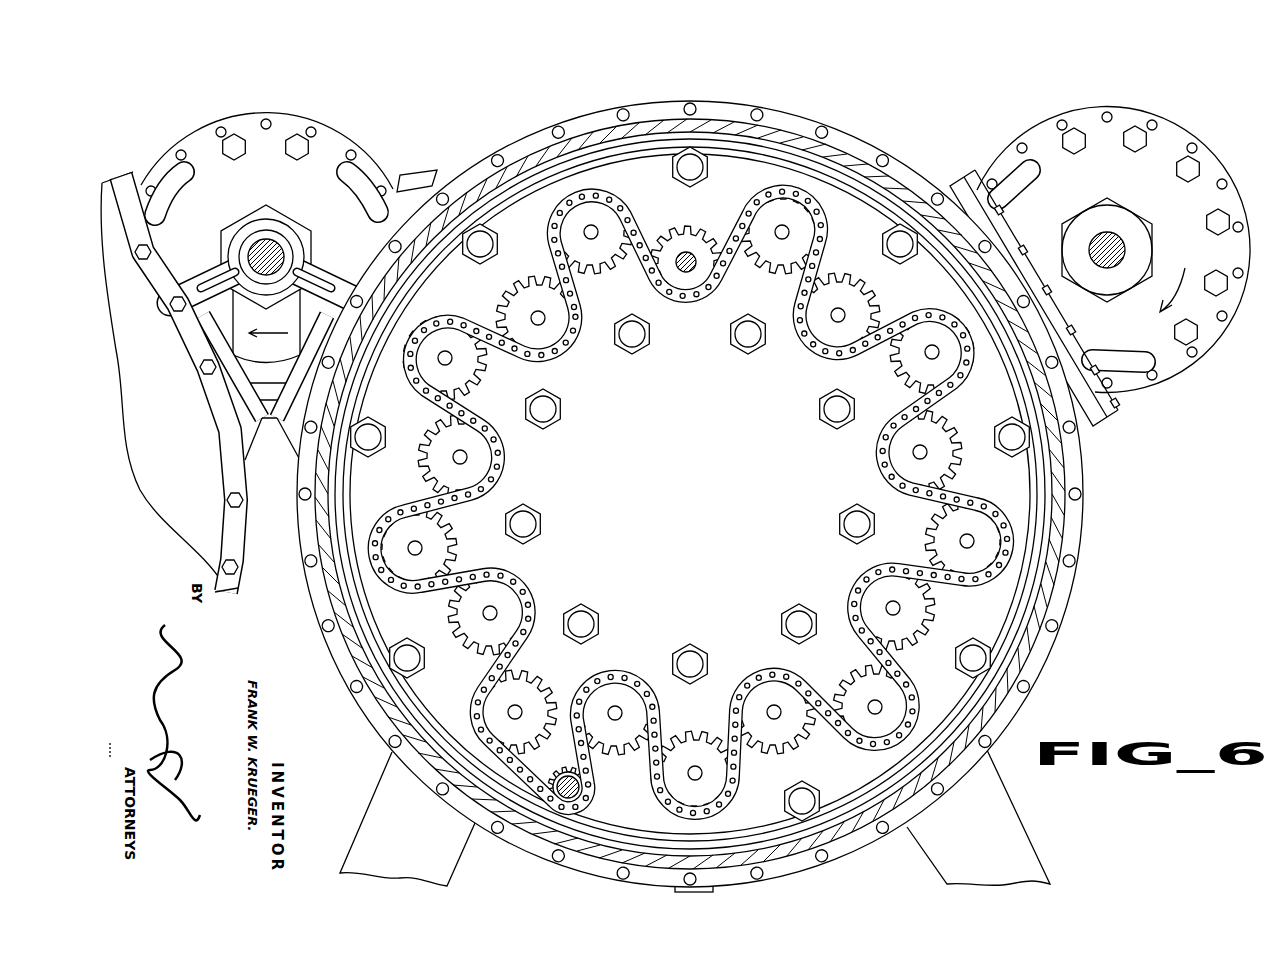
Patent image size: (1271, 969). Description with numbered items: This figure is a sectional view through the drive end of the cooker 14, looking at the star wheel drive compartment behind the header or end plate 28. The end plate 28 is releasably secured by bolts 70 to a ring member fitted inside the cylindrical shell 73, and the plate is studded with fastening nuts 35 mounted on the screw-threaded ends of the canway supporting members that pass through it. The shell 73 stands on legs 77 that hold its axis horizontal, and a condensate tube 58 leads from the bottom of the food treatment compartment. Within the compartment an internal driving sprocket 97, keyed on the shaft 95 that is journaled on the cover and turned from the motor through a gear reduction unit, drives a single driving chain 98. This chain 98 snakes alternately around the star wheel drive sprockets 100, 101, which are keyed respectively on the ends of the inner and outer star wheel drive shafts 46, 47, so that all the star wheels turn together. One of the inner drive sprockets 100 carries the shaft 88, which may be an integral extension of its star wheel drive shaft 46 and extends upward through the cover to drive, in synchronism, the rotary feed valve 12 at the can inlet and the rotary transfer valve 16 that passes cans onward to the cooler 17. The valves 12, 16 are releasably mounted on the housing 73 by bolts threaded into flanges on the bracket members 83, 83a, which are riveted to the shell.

The rotary feed valve 12 is at (1199, 374).
The cooker 14 is at (1087, 587).
The rotary transfer valve 16 is at (364, 132).
The cooler 17 is at (254, 542).
The header or end plate 28 is at (1020, 519).
The fastening nut 35 is at (747, 348).
The inner star wheel drive shaft 46 is at (617, 708).
The outer star wheel drive shaft 47 is at (873, 704).
The condensate tube 58 is at (720, 889).
The bolts 70 is at (1058, 622).
The cylindrical shell 73 is at (1120, 405).
The legs 77 is at (366, 808).
The bracket member 83 is at (1093, 428).
The bracket member 83a is at (432, 186).
The shaft 88 is at (688, 251).
The shaft 95 is at (582, 786).
The internal driving sprocket 97 is at (557, 767).
The driving chain 98 is at (527, 592).
The star wheel drive sprocket 100 is at (686, 302).
The star wheel drive sprocket 101 is at (698, 720).